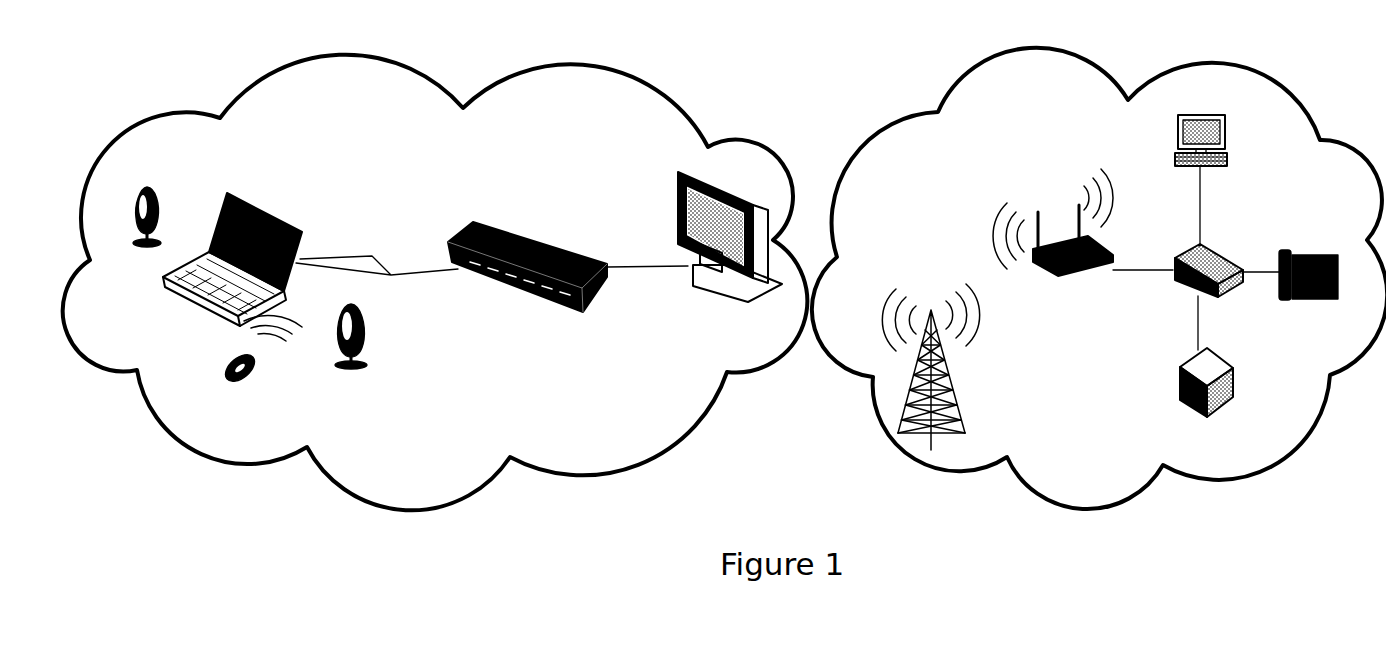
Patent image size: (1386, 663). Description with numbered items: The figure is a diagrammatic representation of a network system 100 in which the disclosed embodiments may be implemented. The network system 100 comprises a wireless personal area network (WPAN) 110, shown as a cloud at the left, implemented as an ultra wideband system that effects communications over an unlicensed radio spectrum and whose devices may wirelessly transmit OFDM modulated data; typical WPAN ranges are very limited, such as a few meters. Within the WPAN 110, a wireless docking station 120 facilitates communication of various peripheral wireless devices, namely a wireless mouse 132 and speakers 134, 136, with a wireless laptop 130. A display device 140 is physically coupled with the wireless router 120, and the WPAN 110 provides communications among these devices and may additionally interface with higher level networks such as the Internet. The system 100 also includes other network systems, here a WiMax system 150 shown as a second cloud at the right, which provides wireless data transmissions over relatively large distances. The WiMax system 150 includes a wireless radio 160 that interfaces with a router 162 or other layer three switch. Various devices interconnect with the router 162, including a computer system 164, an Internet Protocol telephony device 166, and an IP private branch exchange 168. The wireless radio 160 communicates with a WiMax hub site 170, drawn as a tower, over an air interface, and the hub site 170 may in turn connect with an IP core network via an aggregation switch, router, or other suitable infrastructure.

The network system 100 is at (750, 45).
The wireless personal area network (WPAN) 110 is at (540, 144).
The wireless docking station 120 is at (474, 222).
The wireless laptop 130 is at (261, 206).
The wireless mouse 132 is at (260, 366).
The speaker 134 is at (132, 238).
The speaker 136 is at (373, 358).
The display device 140 is at (683, 165).
The WiMax system 150 is at (1100, 124).
The wireless radio 160 is at (1063, 273).
The router 162 is at (1227, 295).
The computer system 164 is at (1230, 158).
The Internet Protocol (IP) telephony device 166 is at (1323, 297).
The IP private branch exchange (PBX) 168 is at (1233, 370).
The WiMax hub site 170 is at (948, 393).